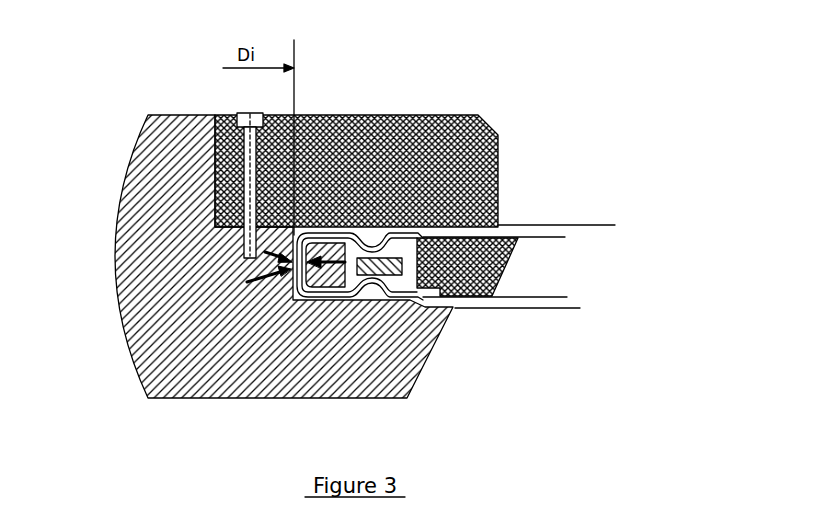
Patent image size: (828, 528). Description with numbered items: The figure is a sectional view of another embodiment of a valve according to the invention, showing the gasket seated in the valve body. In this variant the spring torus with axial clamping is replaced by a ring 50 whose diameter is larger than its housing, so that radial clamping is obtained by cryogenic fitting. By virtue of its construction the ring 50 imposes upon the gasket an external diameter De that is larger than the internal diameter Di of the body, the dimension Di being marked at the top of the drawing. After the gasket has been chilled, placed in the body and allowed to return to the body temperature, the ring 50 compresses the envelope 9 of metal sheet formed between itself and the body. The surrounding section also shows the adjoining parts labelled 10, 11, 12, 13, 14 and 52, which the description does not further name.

The envelope 9 is at (320, 226).
The retaining clip 10 is at (367, 245).
The lower plate 11 is at (452, 310).
The spacer block 12 is at (489, 252).
The upper plate 13 is at (403, 228).
The insulating block 14 is at (388, 154).
The ring 50 is at (342, 276).
The block material 52 is at (407, 154).